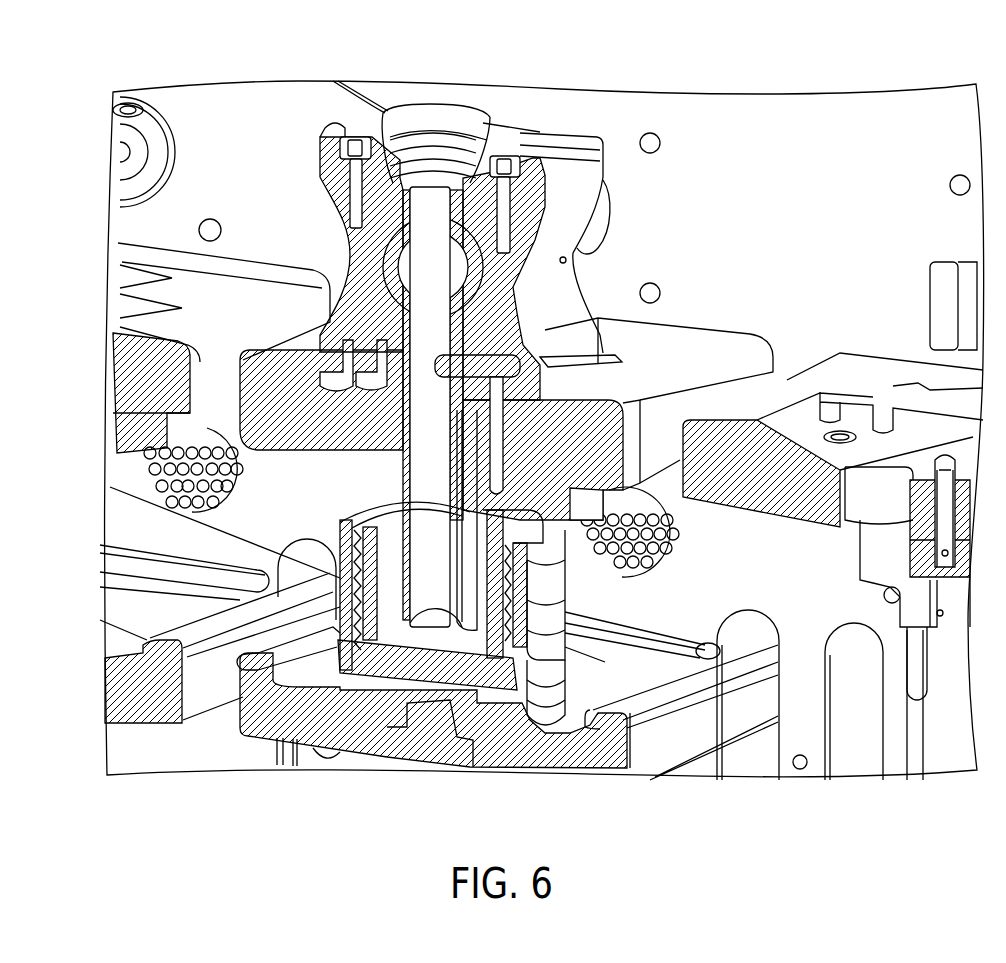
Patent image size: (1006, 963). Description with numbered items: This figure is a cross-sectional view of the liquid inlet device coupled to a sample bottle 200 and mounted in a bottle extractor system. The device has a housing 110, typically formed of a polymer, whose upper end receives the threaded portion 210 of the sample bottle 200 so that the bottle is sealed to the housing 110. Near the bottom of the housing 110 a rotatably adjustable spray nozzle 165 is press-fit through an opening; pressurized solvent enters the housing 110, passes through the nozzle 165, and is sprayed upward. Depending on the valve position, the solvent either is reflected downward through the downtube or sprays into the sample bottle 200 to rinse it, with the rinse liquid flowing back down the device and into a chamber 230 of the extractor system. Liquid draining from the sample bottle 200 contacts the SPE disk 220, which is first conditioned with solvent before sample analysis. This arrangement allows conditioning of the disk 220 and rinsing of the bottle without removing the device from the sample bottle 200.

The housing 110 is at (595, 177).
The nozzle 165 is at (503, 348).
The sample bottle 200 is at (490, 122).
The threaded portion 210 is at (543, 130).
The SPE disk 220 is at (408, 648).
The chamber 230 is at (393, 589).